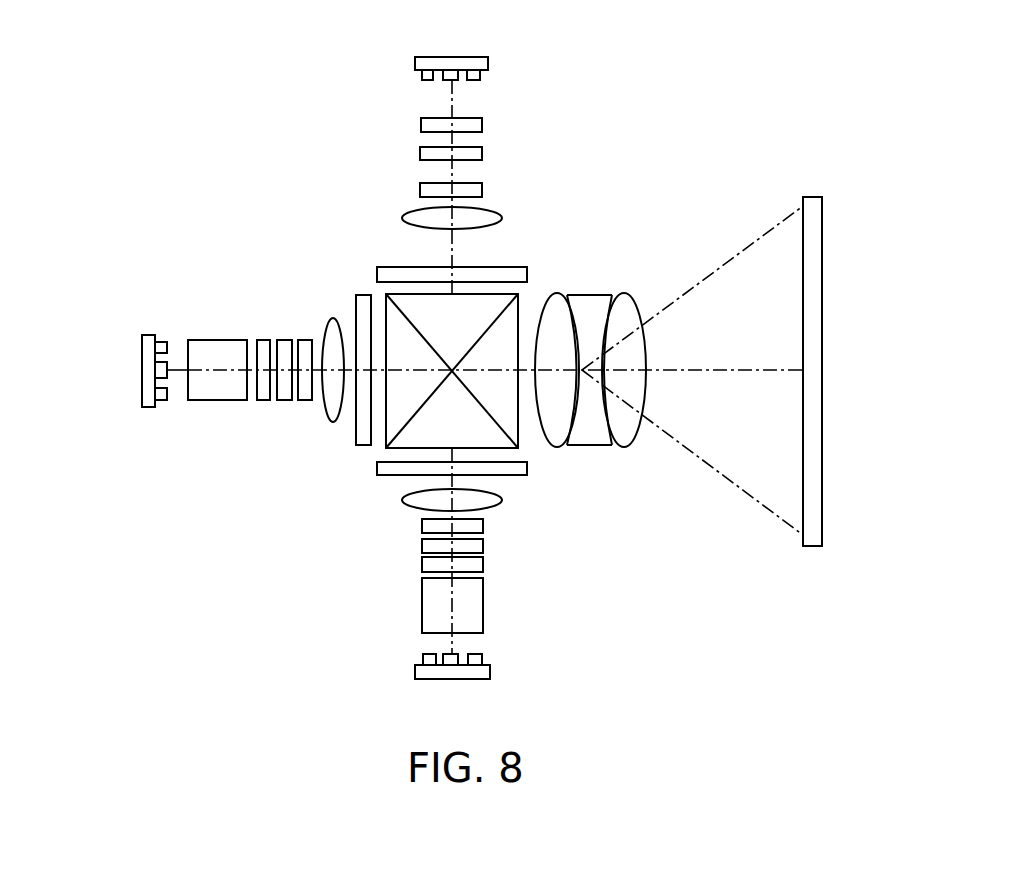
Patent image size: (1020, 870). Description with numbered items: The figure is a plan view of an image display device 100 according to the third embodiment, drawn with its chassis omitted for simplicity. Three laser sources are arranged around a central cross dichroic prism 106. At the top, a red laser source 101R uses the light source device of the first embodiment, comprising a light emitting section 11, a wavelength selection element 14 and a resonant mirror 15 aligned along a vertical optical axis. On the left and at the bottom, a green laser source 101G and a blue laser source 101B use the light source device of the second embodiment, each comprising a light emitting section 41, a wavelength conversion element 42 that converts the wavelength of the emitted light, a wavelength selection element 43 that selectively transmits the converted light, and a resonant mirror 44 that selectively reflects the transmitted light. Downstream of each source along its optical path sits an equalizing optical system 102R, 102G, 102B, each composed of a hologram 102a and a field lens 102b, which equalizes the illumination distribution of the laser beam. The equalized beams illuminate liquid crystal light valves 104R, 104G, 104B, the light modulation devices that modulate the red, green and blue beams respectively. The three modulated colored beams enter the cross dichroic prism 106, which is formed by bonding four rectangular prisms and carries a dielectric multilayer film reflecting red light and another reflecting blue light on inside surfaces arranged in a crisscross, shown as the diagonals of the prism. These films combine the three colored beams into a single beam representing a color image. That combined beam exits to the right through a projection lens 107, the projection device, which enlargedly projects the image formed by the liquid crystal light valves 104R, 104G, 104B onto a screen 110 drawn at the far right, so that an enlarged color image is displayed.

The image display device 100 is at (686, 136).
The light emitting section 11 is at (427, 56).
The wavelength selection element 14 is at (420, 125).
The resonant mirror 15 is at (482, 153).
The red laser source 101R is at (496, 125).
The green laser source 101G is at (195, 424).
The blue laser source 101B is at (509, 593).
The equalizing optical system 102R is at (598, 155).
The equalizing optical system 102G is at (345, 478).
The equalizing optical system 102B is at (608, 482).
The hologram 102a is at (482, 190).
The field lens 102b is at (502, 218).
The liquid crystal light valve 104R is at (386, 270).
The liquid crystal light valve 104G is at (356, 300).
The liquid crystal light valve 104B is at (383, 478).
The cross dichroic prism 106 is at (508, 420).
The projection lens 107 is at (650, 283).
The screen 110 is at (817, 197).
The light emitting section 41 is at (141, 369).
The wavelength conversion element 42 is at (203, 340).
The wavelength selection element 43 is at (263, 340).
The resonant mirror 44 is at (283, 340).